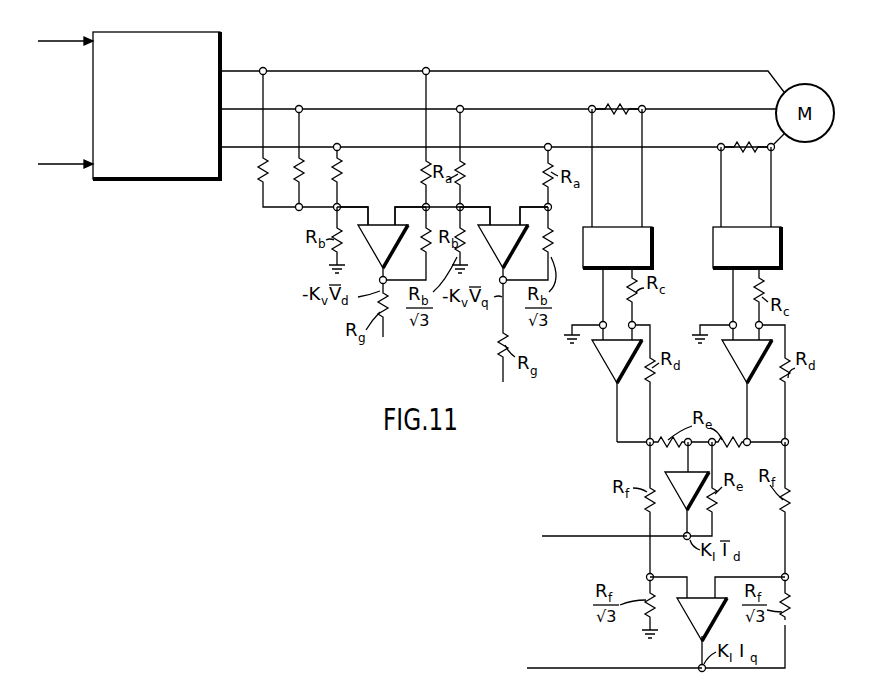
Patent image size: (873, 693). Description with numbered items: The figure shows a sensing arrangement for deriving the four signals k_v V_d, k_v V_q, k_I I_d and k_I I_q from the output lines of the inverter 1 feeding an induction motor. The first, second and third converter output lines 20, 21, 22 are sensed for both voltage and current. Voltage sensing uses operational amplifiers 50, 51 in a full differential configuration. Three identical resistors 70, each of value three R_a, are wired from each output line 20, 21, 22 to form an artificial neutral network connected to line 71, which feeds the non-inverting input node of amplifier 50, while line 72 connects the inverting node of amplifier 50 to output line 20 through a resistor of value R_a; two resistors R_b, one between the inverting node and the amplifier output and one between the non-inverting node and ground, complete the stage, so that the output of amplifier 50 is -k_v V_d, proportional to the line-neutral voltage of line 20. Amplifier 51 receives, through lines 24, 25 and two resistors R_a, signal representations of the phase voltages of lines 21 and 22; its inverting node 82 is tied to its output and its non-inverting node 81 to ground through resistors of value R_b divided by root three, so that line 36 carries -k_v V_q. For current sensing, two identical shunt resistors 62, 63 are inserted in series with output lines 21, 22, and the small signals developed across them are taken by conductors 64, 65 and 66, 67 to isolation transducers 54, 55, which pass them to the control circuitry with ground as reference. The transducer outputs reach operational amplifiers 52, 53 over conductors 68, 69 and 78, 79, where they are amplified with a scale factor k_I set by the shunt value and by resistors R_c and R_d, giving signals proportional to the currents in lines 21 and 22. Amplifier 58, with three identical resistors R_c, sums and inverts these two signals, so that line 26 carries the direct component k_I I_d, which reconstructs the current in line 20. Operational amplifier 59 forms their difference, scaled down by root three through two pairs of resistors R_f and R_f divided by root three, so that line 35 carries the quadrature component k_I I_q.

The inverter 1 is at (221, 38).
The first converter output line 20 is at (490, 71).
The second converter output line 21 is at (500, 110).
The third converter output line 22 is at (492, 148).
The line 24 is at (463, 155).
The line 25 is at (546, 164).
The line 26 is at (610, 539).
The line 35 is at (591, 667).
The line 36 is at (503, 322).
The operational amplifier 50 is at (386, 281).
The operational amplifier 51 is at (507, 277).
The operational amplifier 52 is at (606, 362).
The operational amplifier 53 is at (737, 364).
The isolation transducer 54 is at (650, 250).
The isolation transducer 55 is at (779, 250).
The amplifier 58 is at (676, 496).
The operational amplifier 59 is at (689, 614).
The shunt resistor 62 is at (610, 106).
The shunt resistor 63 is at (757, 146).
The conductor 64 is at (593, 185).
The conductor 65 is at (642, 185).
The conductor 66 is at (720, 185).
The conductor 67 is at (771, 173).
The conductor 68 is at (603, 290).
The conductor 69 is at (634, 320).
The resistors 70 is at (260, 170).
The line 71 is at (368, 203).
The line 72 is at (397, 191).
The conductor 78 is at (731, 288).
The conductor 79 is at (765, 278).
The non-inverting node 81 is at (477, 205).
The inverting node 82 is at (532, 205).